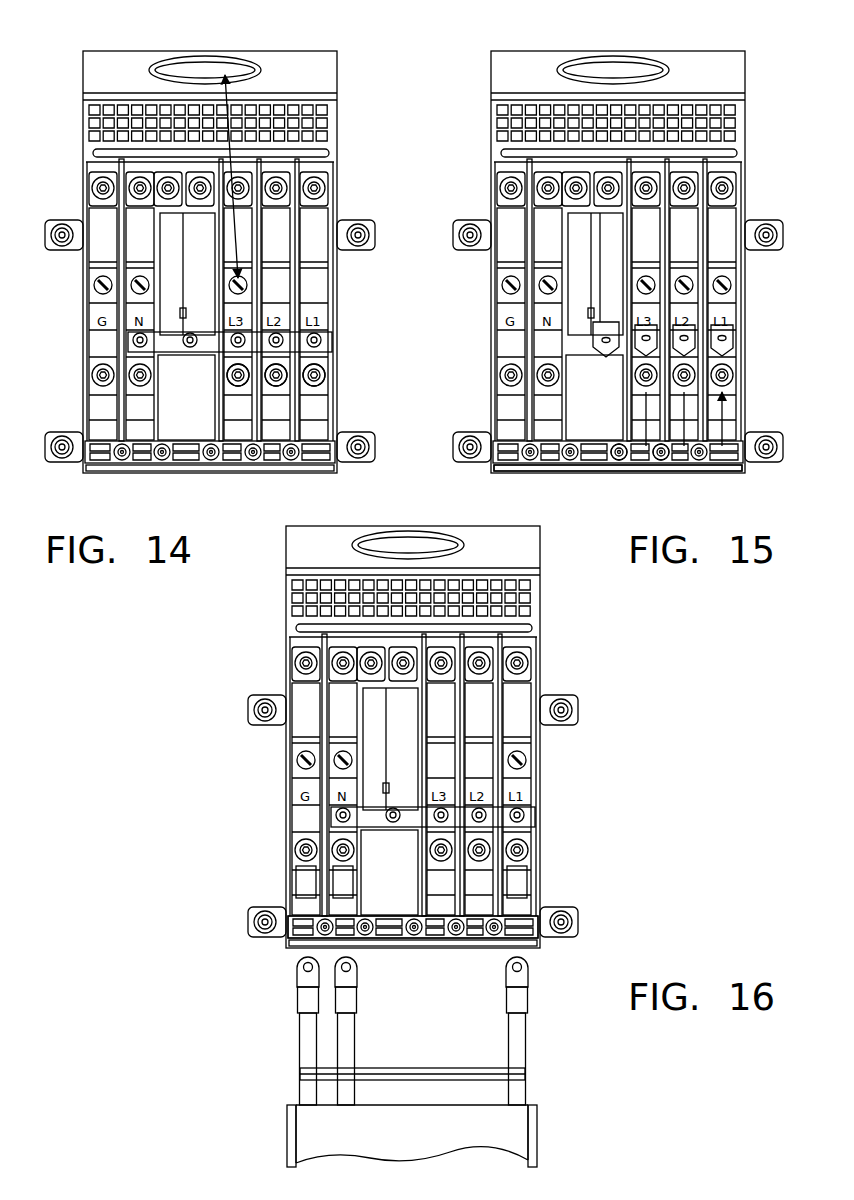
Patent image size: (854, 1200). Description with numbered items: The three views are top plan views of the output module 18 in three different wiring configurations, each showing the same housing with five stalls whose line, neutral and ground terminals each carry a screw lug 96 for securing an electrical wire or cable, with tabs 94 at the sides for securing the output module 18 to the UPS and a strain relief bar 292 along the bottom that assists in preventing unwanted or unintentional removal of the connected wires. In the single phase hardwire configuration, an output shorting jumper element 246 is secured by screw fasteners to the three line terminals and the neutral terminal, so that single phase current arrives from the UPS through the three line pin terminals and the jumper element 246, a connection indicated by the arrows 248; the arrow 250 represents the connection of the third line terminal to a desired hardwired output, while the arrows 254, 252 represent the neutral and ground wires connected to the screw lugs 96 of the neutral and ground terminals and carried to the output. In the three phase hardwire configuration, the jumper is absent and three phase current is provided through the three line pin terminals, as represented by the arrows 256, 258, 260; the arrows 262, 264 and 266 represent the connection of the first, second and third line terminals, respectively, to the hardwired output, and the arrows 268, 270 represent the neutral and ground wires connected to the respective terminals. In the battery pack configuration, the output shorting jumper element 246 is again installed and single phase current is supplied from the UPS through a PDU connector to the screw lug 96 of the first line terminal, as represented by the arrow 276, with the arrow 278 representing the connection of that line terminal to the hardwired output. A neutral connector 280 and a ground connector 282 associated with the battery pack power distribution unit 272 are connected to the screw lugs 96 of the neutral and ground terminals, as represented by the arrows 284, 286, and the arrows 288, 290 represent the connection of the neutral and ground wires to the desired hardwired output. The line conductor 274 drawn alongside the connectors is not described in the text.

In FIG. 14, the output module 18 is at (350, 68).
In FIG. 15, the output module 18 is at (760, 66).
In FIG. 16, the output module 18 is at (240, 774).
In FIG. 15, the tabs 94 is at (776, 219).
In FIG. 15, the screw lug 96 is at (730, 296).
In FIG. 16, the screw lug 96 is at (430, 551).
In FIG. 14, the output shorting jumper element 246 is at (322, 348).
In FIG. 16, the output shorting jumper element 246 is at (528, 823).
In FIG. 14, the arrows 248 is at (314, 392).
In FIG. 14, the arrow 250 is at (140, 278).
In FIG. 14, the arrow 252 is at (103, 278).
In FIG. 14, the arrow 254 is at (95, 152).
In FIG. 15, the arrow 256 is at (745, 466).
In FIG. 15, the arrow 258 is at (676, 424).
In FIG. 15, the arrow 260 is at (643, 423).
In FIG. 15, the arrow 262 is at (722, 278).
In FIG. 15, the arrow 264 is at (684, 278).
In FIG. 15, the arrow 266 is at (646, 278).
In FIG. 15, the arrow 268 is at (548, 278).
In FIG. 15, the arrow 270 is at (511, 278).
In FIG. 16, the battery pack power distribution unit 272 is at (503, 1128).
In FIG. 16, the line conductor 274 is at (522, 1046).
In FIG. 16, the arrow 276 is at (517, 946).
In FIG. 16, the arrow 278 is at (528, 628).
In FIG. 16, the neutral connector 280 is at (350, 1033).
In FIG. 16, the ground connector 282 is at (303, 1036).
In FIG. 16, the arrow 284 is at (343, 905).
In FIG. 16, the arrow 286 is at (306, 905).
In FIG. 16, the arrow 288 is at (343, 753).
In FIG. 16, the arrow 290 is at (306, 753).
In FIG. 16, the strain relief bar 292 is at (475, 933).